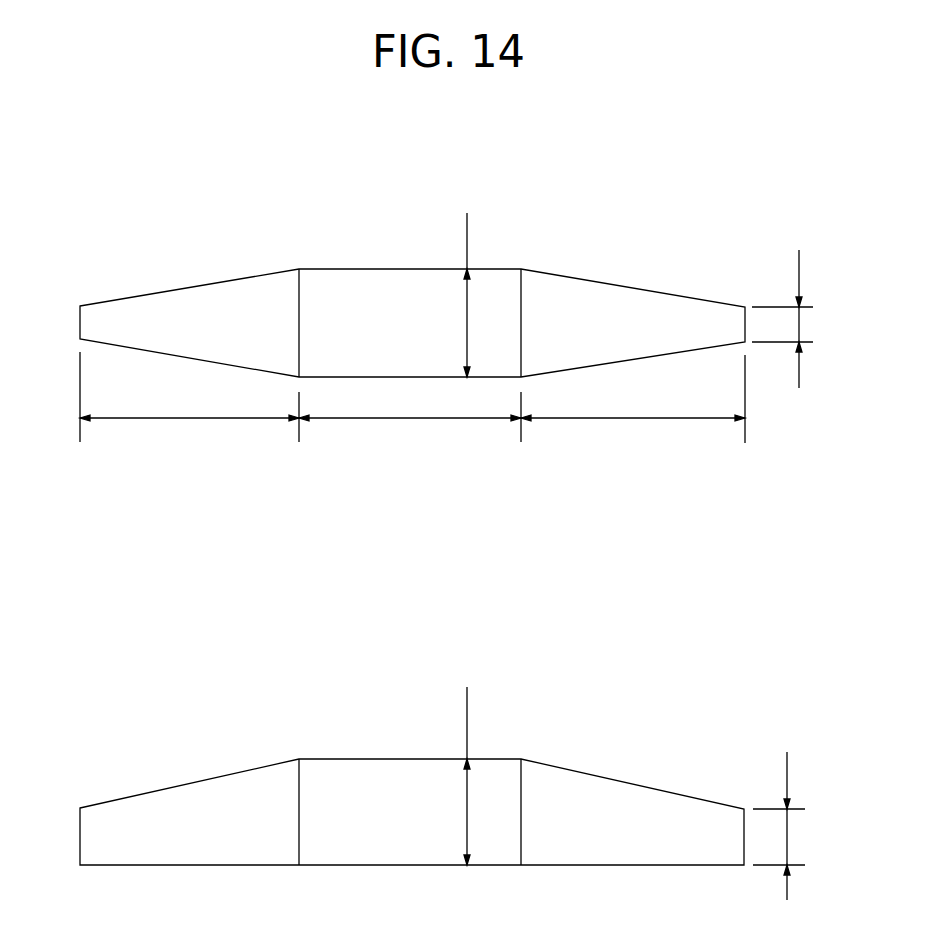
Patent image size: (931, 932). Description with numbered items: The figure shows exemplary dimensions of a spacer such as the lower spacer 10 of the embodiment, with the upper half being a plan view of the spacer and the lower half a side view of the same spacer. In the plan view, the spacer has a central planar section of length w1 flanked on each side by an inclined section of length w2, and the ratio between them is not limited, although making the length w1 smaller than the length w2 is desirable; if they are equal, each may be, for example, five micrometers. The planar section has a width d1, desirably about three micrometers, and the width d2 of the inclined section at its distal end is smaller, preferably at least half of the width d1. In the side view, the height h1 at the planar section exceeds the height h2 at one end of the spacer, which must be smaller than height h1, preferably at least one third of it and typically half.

The lower spacer 10 is at (608, 283).
The width of the planar section d1 is at (449, 295).
The width of the inclined section at its distal end d2 is at (782, 319).
The length of the planar section w1 is at (410, 414).
The length of the inclined section w2 is at (412, 397).
The height at the planar section h1 is at (449, 776).
The height of the spacer at one end h2 is at (774, 826).